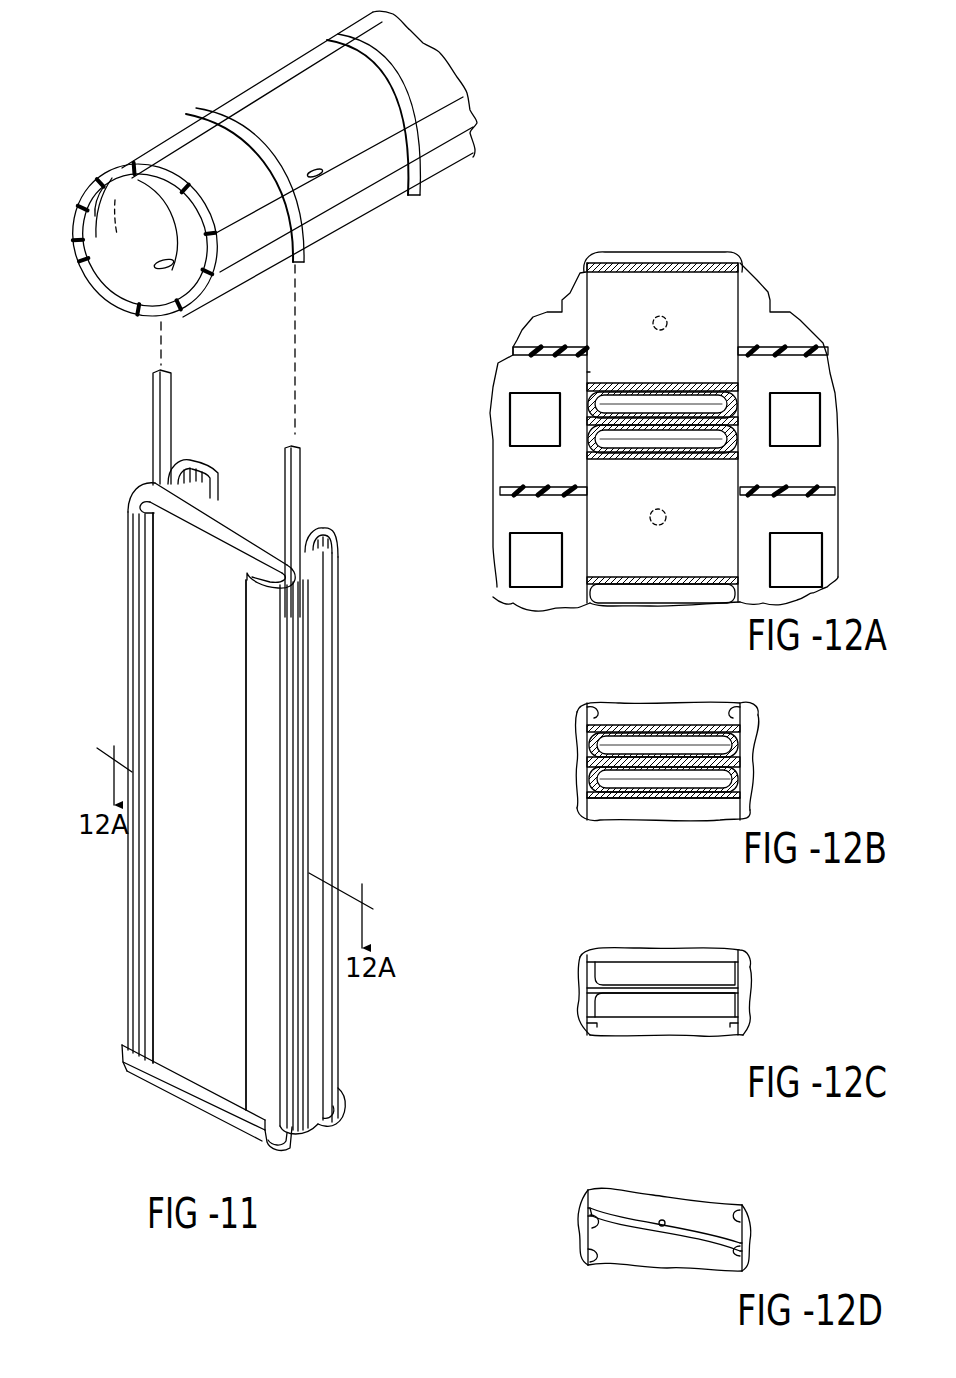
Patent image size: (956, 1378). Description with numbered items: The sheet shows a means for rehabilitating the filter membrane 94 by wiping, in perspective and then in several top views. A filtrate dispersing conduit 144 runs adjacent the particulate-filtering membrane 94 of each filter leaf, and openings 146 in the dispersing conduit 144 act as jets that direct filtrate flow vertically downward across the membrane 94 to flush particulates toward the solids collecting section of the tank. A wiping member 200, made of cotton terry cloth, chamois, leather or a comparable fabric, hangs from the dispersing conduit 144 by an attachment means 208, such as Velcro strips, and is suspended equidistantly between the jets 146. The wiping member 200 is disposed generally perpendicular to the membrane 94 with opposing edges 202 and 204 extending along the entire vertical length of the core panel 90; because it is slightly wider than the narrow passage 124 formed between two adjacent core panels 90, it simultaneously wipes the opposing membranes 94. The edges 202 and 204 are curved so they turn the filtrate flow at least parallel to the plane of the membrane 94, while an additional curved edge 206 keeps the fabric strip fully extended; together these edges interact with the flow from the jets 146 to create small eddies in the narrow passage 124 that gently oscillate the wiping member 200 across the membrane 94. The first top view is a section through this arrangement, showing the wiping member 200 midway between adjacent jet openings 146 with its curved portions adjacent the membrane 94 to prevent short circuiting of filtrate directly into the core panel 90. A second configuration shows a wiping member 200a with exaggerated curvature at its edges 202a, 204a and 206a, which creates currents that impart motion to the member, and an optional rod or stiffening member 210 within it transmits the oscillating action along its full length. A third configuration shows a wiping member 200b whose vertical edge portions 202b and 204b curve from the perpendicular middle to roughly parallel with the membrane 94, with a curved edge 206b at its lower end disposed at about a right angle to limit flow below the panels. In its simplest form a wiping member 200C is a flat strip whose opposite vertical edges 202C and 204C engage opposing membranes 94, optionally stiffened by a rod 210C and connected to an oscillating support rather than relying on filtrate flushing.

In FIG. 11, the filtrate dispersing conduit 144 is at (150, 143).
In FIG. 11, the opening 146 is at (155, 265).
In FIG. 12A, the opening 146 is at (655, 318).
In FIG. 11, the attachment means 208 is at (400, 125).
In FIG. 11, the edge 202 is at (131, 660).
In FIG. 12A, the edge 202 is at (740, 443).
In FIG. 11, the wiping member 200 is at (212, 707).
In FIG. 12A, the wiping member 200 is at (690, 430).
In FIG. 11, the edge 204 is at (288, 707).
In FIG. 12A, the edge 204 is at (590, 400).
In FIG. 11, the curved edge 206 is at (188, 1105).
In FIG. 12A, the curved edge 206 is at (697, 383).
In FIG. 12A, the narrow passage 124 is at (687, 284).
In FIG. 12A, the membrane 94 is at (738, 302).
In FIG. 12B, the membrane 94 is at (593, 716).
In FIG. 12C, the membrane 94 is at (595, 1027).
In FIG. 12D, the membrane 94 is at (742, 1206).
In FIG. 12A, the core panel 90 is at (795, 385).
In FIG. 12B, the rod or stiffening member 210 is at (660, 760).
In FIG. 12B, the edge 202a is at (737, 750).
In FIG. 12B, the edge 204a is at (592, 754).
In FIG. 12B, the curved edge 206a is at (695, 800).
In FIG. 12B, the wiping member 200a is at (633, 772).
In FIG. 12C, the curved edge 206b is at (657, 962).
In FIG. 12C, the vertical edge portion 202b is at (740, 970).
In FIG. 12C, the vertical edge portion 204b is at (590, 1003).
In FIG. 12C, the wiping member 200b is at (647, 1000).
In FIG. 12D, the rod or stiffening member 210C is at (660, 1222).
In FIG. 12D, the wiping member 200C is at (682, 1222).
In FIG. 12D, the vertical edge 204C is at (595, 1227).
In FIG. 12D, the vertical edge 202C is at (742, 1253).